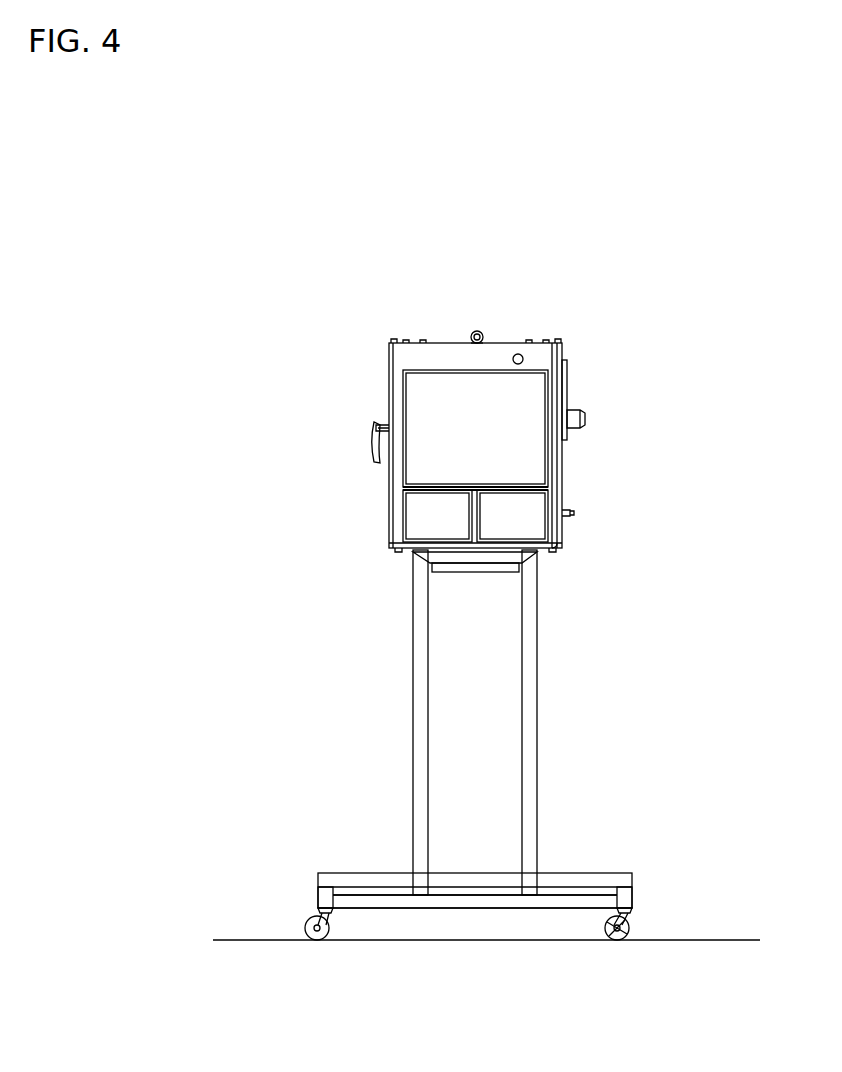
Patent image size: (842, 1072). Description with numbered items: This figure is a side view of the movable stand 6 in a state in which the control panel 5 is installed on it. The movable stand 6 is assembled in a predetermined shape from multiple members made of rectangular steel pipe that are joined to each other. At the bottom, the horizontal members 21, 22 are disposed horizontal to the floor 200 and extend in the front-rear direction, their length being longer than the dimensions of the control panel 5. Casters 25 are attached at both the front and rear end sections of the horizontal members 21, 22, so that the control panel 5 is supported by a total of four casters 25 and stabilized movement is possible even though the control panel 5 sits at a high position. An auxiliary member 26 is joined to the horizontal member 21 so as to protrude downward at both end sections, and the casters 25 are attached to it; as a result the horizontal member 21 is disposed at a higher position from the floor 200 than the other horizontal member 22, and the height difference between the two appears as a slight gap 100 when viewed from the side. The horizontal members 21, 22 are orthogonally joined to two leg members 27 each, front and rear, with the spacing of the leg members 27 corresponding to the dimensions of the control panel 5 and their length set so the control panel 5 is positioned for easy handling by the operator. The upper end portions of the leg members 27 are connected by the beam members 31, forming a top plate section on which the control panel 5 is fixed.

The control panel 5 is at (522, 453).
The movable stand 6 is at (408, 647).
The horizontal member 21 is at (590, 866).
The horizontal member 22 is at (550, 902).
The caster 25 is at (316, 935).
The auxiliary member 26 is at (325, 900).
The leg member 27 is at (418, 758).
The beam member 31 is at (470, 555).
The gap 100 is at (476, 891).
The floor 200 is at (730, 940).